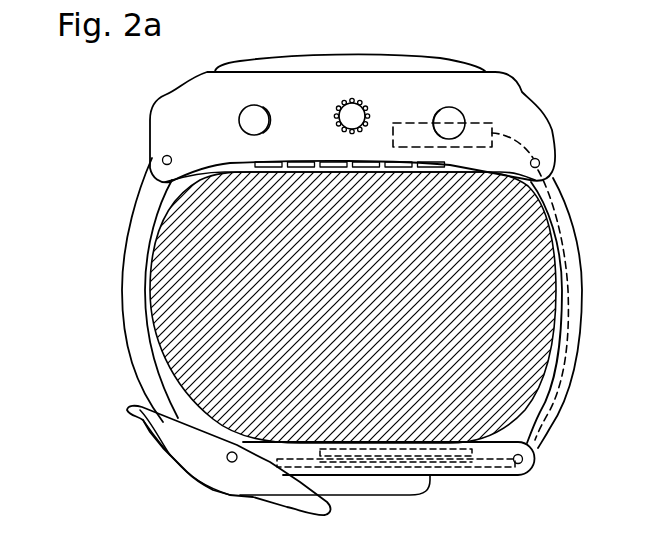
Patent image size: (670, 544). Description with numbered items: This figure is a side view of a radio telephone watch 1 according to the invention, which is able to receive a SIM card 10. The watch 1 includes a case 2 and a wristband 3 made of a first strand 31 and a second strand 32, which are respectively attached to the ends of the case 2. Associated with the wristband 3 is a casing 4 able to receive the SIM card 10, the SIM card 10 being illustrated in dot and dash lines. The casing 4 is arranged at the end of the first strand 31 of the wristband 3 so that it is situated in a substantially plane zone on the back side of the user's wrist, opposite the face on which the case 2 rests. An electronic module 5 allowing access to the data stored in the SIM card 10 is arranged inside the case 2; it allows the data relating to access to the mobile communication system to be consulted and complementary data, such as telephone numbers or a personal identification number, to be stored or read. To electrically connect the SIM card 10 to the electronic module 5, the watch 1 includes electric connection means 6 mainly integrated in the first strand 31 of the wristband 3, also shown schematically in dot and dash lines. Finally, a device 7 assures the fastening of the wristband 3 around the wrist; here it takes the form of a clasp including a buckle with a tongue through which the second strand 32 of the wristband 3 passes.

The radio telephone watch 1 is at (582, 101).
The case 2 is at (165, 128).
The wristband 3 is at (92, 289).
The first strand 31 is at (575, 241).
The second strand 32 is at (124, 240).
The casing 4 is at (497, 463).
The electronic module 5 is at (410, 125).
The electric connection means 6 is at (570, 339).
The fastening device 7 is at (137, 417).
The SIM card 10 is at (445, 465).